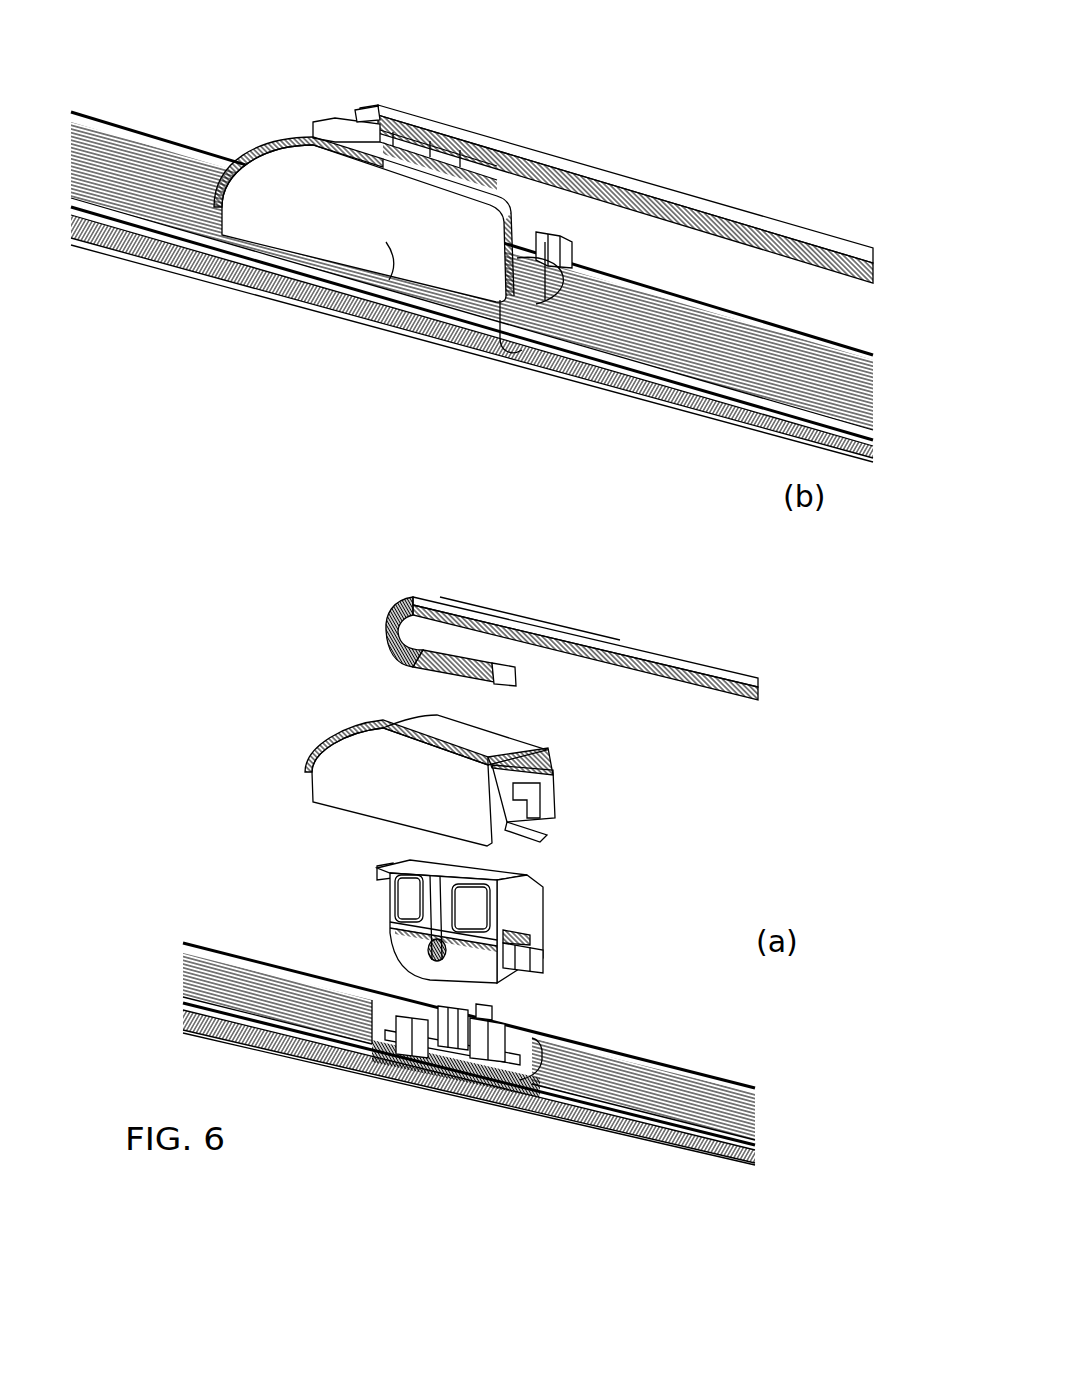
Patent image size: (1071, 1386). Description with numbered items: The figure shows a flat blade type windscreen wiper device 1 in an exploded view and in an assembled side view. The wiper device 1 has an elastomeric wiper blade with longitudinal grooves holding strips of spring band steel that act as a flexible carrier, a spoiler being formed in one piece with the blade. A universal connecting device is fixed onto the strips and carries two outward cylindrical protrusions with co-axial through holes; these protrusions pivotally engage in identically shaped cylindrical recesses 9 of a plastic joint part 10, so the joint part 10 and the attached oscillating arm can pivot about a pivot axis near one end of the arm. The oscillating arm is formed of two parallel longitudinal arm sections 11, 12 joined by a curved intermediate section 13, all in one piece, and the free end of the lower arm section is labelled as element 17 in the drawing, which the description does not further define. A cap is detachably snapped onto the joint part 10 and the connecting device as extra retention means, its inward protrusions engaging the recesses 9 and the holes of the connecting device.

The windscreen wiper device 1 is at (567, 124).
The cylindrical recesses 9 is at (437, 958).
The joint part 10 is at (537, 908).
The longitudinal arm section 11 is at (477, 607).
The longitudinal arm section 12 is at (442, 675).
The curved intermediate section 13 is at (388, 622).
The leg end 17 is at (490, 660).